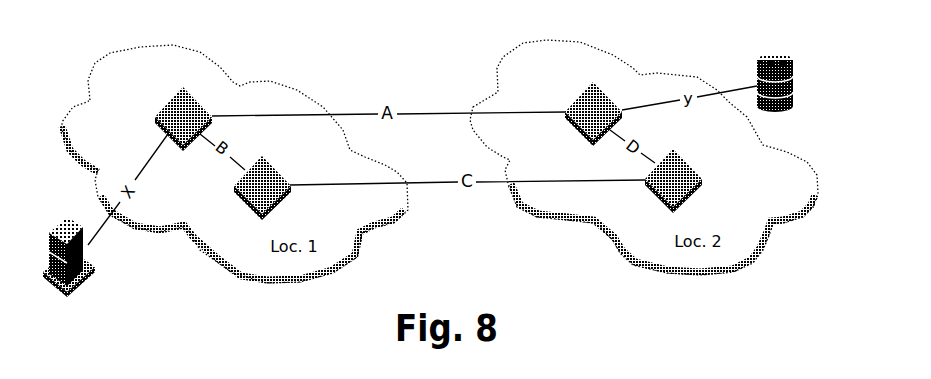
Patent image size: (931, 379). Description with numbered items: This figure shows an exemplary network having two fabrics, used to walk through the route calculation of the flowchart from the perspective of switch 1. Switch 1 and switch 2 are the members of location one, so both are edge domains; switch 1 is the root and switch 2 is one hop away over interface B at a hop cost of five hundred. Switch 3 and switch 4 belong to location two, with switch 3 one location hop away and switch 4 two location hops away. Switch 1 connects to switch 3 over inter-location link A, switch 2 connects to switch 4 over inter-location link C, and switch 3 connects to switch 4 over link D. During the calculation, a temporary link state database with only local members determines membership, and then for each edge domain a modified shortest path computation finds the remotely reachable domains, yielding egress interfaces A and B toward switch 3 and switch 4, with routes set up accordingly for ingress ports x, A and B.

The switch 1 is at (183, 119).
The switch 2 is at (262, 188).
The switch 3 is at (593, 114).
The switch 4 is at (673, 181).